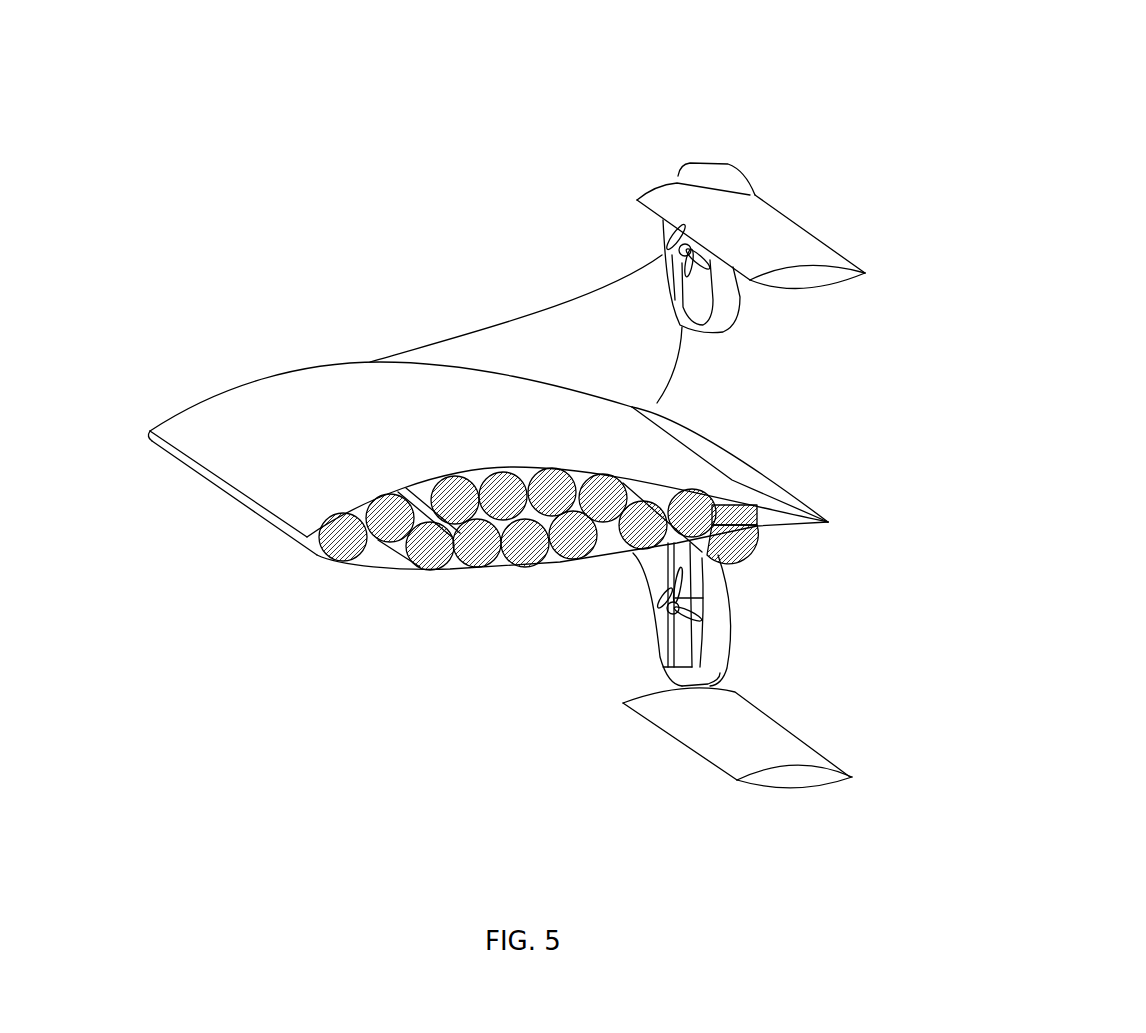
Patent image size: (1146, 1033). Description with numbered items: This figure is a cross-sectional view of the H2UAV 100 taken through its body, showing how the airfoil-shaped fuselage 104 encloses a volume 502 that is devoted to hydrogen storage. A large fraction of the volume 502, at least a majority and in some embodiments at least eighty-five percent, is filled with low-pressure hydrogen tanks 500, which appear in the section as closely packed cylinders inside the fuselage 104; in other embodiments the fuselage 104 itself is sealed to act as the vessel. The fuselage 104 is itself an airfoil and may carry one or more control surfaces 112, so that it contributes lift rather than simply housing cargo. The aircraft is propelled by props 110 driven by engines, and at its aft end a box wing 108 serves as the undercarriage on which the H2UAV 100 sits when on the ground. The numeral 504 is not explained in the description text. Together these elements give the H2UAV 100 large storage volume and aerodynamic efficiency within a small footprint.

The H2UAV 100 is at (1028, 146).
The fuselage 104 is at (370, 417).
The box wing 108 is at (758, 250).
The props 110 is at (680, 252).
The control surfaces 112 is at (735, 473).
The low-pressure hydrogen tanks 500 is at (475, 553).
The volume 502 is at (377, 553).
The battery module 504 is at (722, 546).